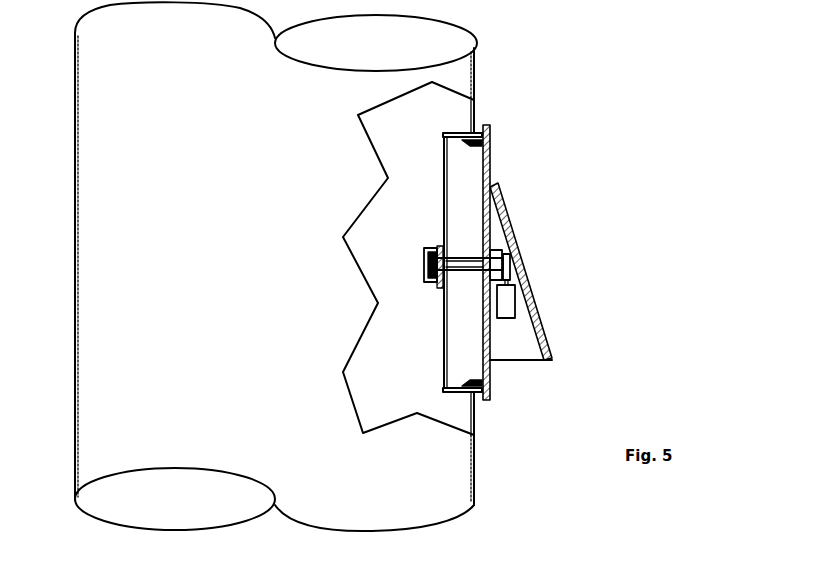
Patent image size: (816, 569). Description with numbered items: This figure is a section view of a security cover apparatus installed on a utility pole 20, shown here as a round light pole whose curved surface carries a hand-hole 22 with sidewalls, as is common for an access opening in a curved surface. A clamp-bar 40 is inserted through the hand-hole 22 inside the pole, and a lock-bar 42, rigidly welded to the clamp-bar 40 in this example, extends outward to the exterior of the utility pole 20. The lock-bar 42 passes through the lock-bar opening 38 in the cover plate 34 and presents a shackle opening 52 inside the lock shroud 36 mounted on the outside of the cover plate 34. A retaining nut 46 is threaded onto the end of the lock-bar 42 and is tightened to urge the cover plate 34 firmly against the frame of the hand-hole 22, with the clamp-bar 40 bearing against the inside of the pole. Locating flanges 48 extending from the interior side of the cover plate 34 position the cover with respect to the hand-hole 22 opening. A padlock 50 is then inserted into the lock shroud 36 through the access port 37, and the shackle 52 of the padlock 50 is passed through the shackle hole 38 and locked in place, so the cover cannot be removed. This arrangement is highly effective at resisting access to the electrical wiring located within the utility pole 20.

The utility pole 20 is at (478, 62).
The hand-hole 22 is at (449, 131).
The cover plate 34 is at (492, 169).
The lock shroud 36 is at (500, 198).
The access port 37 is at (508, 372).
The lock-bar opening 38 is at (552, 255).
The clamp-bar 40 is at (431, 284).
The lock-bar 42 is at (437, 257).
The retaining nut 46 is at (494, 251).
The locating flanges 48 is at (462, 143).
The padlock 50 is at (516, 302).
The shackle opening 52 is at (510, 262).